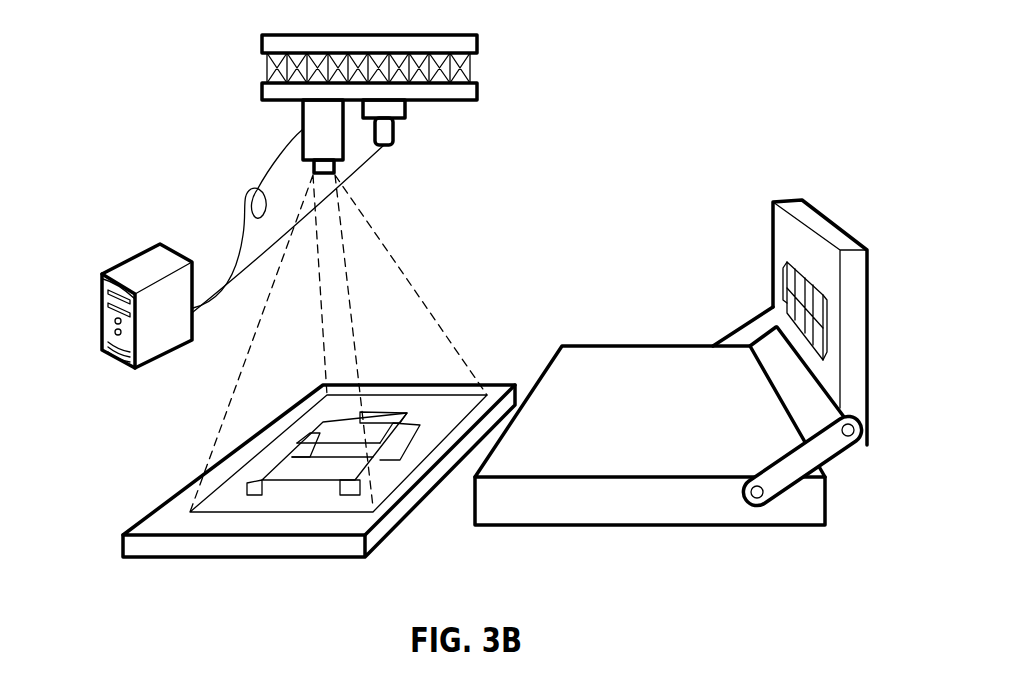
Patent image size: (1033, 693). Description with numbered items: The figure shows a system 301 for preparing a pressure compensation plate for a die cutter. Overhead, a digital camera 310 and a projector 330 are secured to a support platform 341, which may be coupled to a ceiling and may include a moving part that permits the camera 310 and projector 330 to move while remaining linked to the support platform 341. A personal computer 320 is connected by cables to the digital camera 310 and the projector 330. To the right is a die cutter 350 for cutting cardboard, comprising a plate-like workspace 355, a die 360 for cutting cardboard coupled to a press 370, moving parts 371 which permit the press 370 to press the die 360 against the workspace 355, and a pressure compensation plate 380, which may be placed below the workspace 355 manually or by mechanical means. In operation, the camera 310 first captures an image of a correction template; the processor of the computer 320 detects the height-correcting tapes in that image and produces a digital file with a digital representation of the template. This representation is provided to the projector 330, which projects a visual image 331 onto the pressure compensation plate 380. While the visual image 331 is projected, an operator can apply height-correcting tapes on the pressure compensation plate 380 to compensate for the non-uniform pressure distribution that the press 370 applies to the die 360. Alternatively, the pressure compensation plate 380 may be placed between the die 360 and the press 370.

The system 301 is at (182, 203).
The digital camera 310 is at (385, 133).
The personal computer 320 is at (118, 337).
The projector 330 is at (323, 128).
The visual image 331 is at (238, 483).
The support platform 341 is at (467, 92).
The die cutter 350 is at (741, 158).
The plate-like workspace 355 is at (660, 498).
The die 360 is at (748, 296).
The press 370 is at (813, 222).
The moving parts 371 is at (778, 470).
The pressure compensation plate 380 is at (172, 523).